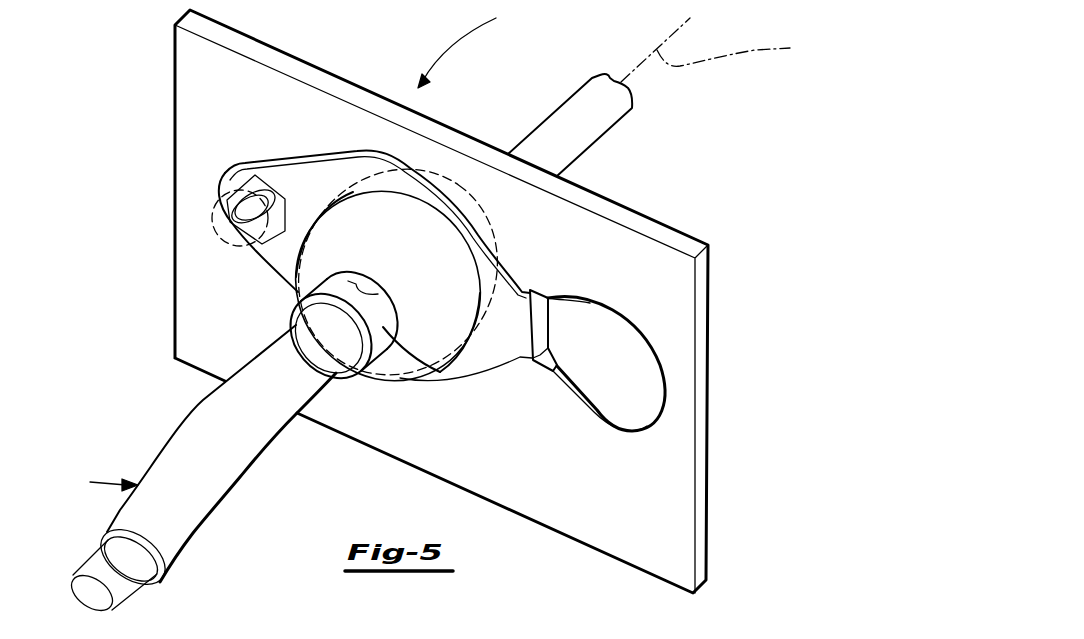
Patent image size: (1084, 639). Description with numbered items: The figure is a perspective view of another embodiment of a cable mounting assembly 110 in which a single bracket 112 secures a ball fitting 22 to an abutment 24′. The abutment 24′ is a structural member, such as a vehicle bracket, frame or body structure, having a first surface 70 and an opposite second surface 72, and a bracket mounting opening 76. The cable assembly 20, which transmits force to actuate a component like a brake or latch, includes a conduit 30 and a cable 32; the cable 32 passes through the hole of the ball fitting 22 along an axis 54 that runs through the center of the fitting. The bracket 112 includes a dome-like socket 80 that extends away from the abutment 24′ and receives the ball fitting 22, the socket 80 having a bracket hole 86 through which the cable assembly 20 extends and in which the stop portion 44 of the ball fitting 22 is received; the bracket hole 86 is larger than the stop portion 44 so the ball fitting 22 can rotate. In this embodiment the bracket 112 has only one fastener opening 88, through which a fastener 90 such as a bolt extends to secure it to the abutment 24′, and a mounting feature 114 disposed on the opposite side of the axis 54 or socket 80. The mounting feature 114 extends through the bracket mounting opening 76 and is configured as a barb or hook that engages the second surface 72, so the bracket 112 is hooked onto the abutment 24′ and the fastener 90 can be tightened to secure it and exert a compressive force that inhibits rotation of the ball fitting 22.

The cable assembly 20 is at (100, 482).
The ball fitting 22 is at (390, 330).
The abutment 24′ is at (400, 412).
The conduit 30 is at (203, 413).
The cable 32 is at (590, 100).
The stop portion 44 is at (300, 308).
The axis 54 is at (716, 50).
The first surface 70 is at (676, 318).
The second surface 72 is at (657, 220).
The bracket mounting opening 76 is at (593, 413).
The socket 80 is at (384, 244).
The bracket hole 86 is at (380, 292).
The fastener opening 88 is at (284, 195).
The fastener 90 is at (228, 170).
The cable mounting assembly 110 is at (479, 44).
The bracket 112 is at (363, 145).
The mounting feature 114 is at (538, 320).